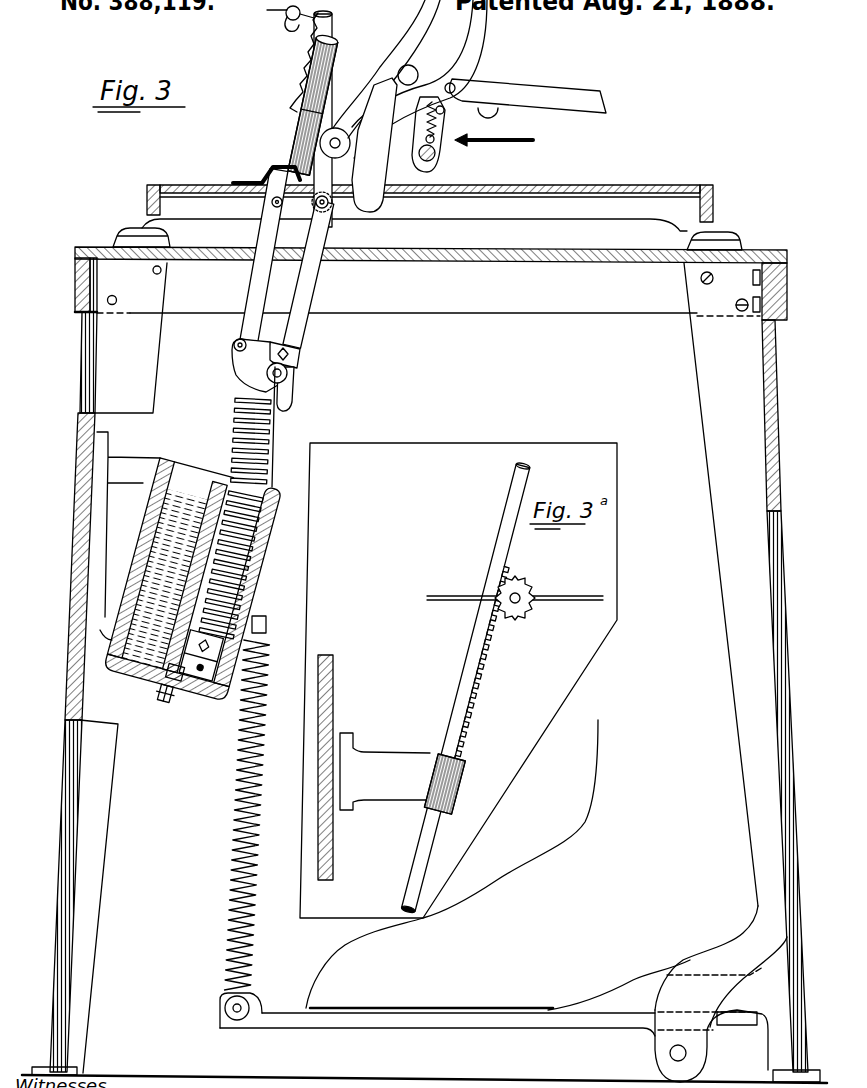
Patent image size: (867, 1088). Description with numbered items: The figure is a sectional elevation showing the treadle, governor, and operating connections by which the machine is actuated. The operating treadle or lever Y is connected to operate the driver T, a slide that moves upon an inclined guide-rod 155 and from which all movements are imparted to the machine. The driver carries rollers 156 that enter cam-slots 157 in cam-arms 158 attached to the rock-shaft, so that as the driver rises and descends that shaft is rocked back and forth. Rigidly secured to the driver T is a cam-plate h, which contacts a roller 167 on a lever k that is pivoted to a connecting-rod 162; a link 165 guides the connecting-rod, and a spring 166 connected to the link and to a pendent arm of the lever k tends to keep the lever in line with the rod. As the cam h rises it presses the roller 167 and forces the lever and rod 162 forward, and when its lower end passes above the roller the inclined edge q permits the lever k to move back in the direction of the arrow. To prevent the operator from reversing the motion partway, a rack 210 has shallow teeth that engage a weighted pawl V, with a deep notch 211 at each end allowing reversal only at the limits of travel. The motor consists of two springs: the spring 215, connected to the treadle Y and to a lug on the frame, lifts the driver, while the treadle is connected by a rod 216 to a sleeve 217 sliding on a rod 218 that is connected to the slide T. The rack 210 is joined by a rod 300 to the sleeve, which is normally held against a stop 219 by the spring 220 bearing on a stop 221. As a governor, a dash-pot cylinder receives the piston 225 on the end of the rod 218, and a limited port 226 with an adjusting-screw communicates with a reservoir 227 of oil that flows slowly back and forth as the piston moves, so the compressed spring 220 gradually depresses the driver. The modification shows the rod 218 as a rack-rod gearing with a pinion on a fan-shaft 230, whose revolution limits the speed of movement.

In FIG. 3, the rack 210 is at (310, 36).
In FIG. 3, the notch 211 is at (305, 104).
In FIG. 3, the inclined guide-rod 155 is at (340, 85).
In FIG. 3, the rollers 156 is at (352, 147).
In FIG. 3, the cam-slots 157 is at (417, 79).
In FIG. 3, the cam-arms 158 is at (386, 69).
In FIG. 3, the connecting-rod 162 is at (560, 90).
In FIG. 3, the link 165 is at (441, 152).
In FIG. 3, the spring 166 is at (428, 124).
In FIG. 3, the roller 167 is at (412, 70).
In FIG. 3, the rod 300 is at (259, 277).
In FIG. 3, the rod 218 is at (305, 298).
In FIG. 3A, the rod 218 is at (468, 678).
In FIG. 3, the stop 219 is at (300, 357).
In FIG. 3, the sleeve 217 is at (293, 390).
In FIG. 3A, the sleeve 217 is at (460, 784).
In FIG. 3, the spring 220 is at (227, 525).
In FIG. 3, the reservoir 227 is at (193, 579).
In FIG. 3, the rod 216 is at (264, 609).
In FIG. 3, the stop 221 is at (188, 698).
In FIG. 3, the limited port 226 is at (160, 690).
In FIG. 3, the piston 225 is at (216, 700).
In FIG. 3, the spring 215 is at (262, 753).
In FIG. 3A, the fan-shaft 230 is at (519, 597).
In FIG. 3, the carriage frame C is at (548, 190).
In FIG. 3, the treadle Y is at (545, 1028).
In FIG. 3, the driver T is at (297, 140).
In FIG. 3, the cam-plate h is at (374, 145).
In FIG. 3, the inclined edge q is at (372, 200).
In FIG. 3, the lever k is at (494, 133).
In FIG. 3, the weighted pawl V is at (284, 522).